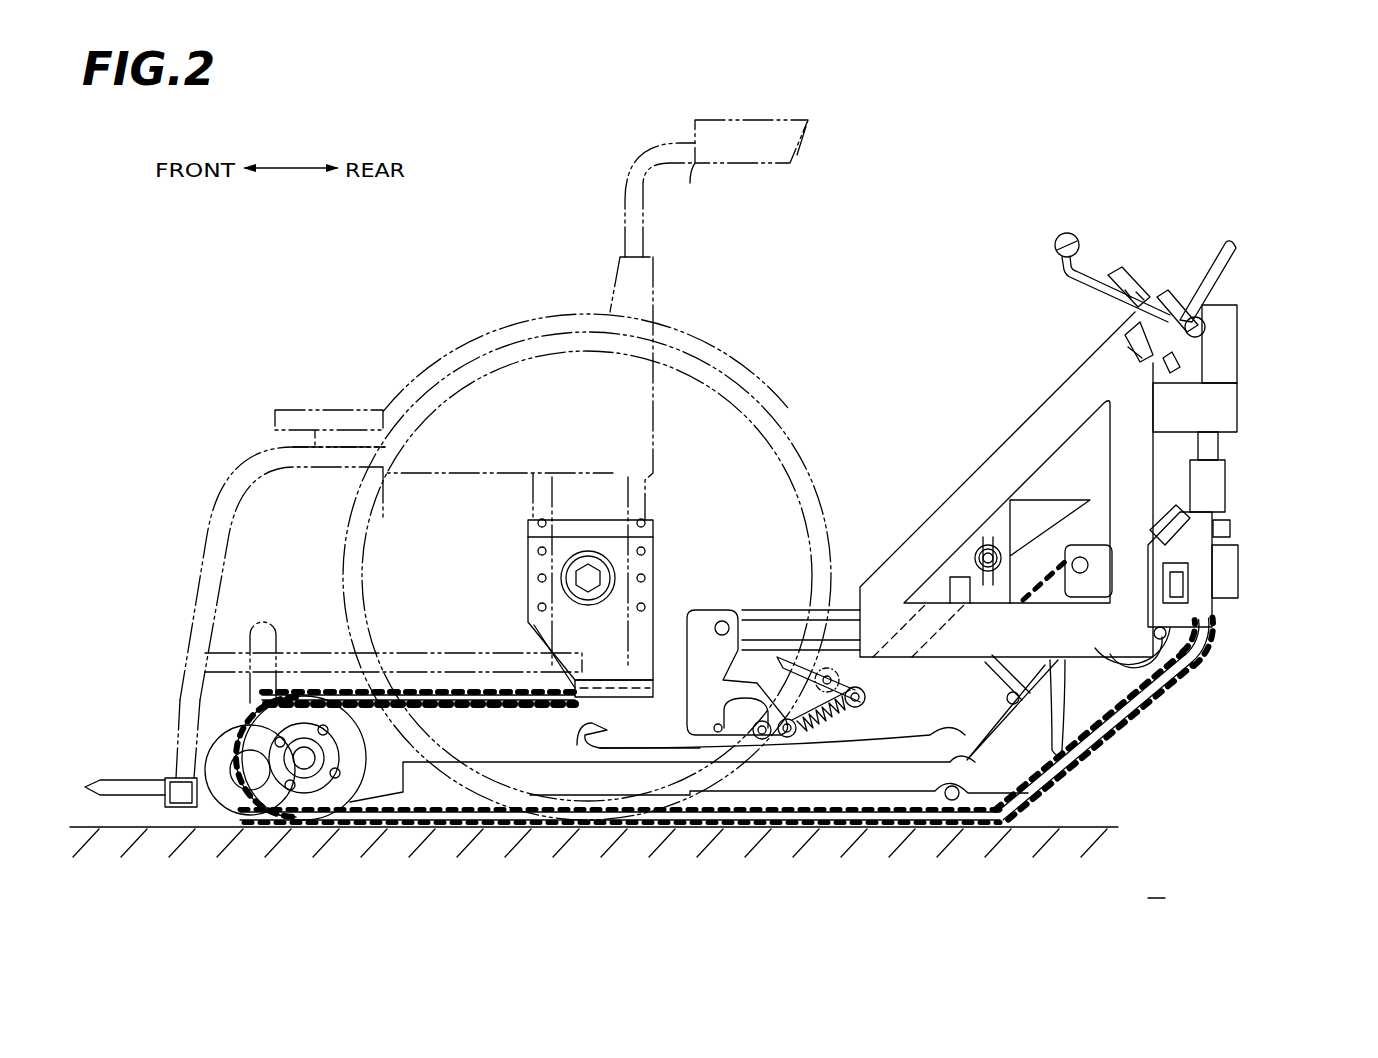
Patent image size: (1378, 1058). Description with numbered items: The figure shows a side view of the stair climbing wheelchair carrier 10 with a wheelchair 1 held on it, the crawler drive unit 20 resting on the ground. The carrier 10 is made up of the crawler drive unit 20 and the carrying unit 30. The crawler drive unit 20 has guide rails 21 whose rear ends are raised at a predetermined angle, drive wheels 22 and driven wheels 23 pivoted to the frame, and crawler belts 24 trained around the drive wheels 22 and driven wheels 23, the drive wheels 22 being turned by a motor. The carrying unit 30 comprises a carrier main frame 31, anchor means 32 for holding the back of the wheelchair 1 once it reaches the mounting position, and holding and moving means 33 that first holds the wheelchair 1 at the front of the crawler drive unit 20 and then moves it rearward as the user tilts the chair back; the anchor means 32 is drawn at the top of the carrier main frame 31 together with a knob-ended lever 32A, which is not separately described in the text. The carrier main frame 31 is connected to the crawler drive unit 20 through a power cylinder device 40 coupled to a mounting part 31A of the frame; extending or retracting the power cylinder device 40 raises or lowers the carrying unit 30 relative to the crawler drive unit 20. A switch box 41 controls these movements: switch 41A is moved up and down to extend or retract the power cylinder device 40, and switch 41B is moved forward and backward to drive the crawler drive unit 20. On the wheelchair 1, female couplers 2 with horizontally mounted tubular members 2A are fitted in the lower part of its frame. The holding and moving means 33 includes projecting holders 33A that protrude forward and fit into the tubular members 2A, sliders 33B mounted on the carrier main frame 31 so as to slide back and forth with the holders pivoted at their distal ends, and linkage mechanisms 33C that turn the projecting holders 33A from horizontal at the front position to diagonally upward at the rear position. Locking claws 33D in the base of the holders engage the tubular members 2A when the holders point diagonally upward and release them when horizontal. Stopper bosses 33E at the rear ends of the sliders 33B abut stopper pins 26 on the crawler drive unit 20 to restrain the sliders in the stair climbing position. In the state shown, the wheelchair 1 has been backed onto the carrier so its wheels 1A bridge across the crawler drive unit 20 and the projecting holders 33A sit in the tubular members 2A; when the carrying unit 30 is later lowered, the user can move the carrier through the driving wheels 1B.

The wheelchair 1 is at (511, 278).
The wheels 1A is at (705, 352).
The driving wheels 1B is at (768, 398).
The female coupler 2 is at (655, 522).
The tubular member 2A is at (622, 668).
The stair climbing wheelchair carrier 10 is at (1332, 278).
The crawler drive unit 20 is at (1112, 790).
The guide rail 21 is at (1005, 828).
The drive wheel 22 is at (305, 800).
The driven wheel 23 is at (1195, 668).
The crawler belt 24 is at (498, 828).
The stopper pin 26 is at (1078, 556).
The carrying unit 30 is at (990, 408).
The carrier main frame 31 is at (975, 496).
The mounting part 31A is at (1240, 352).
The anchor means 32 is at (1154, 270).
The lever knob 32A is at (1090, 270).
The holding and moving means 33 is at (691, 604).
The projecting holder 33A is at (572, 716).
The slider 33B is at (770, 612).
The linkage mechanism 33C is at (838, 730).
The locking claw 33D is at (607, 750).
The stopper boss 33E is at (958, 600).
The power cylinder device 40 is at (1226, 468).
The switch box 41 is at (1200, 566).
The switch 41A is at (1186, 592).
The switch 41B is at (1195, 508).